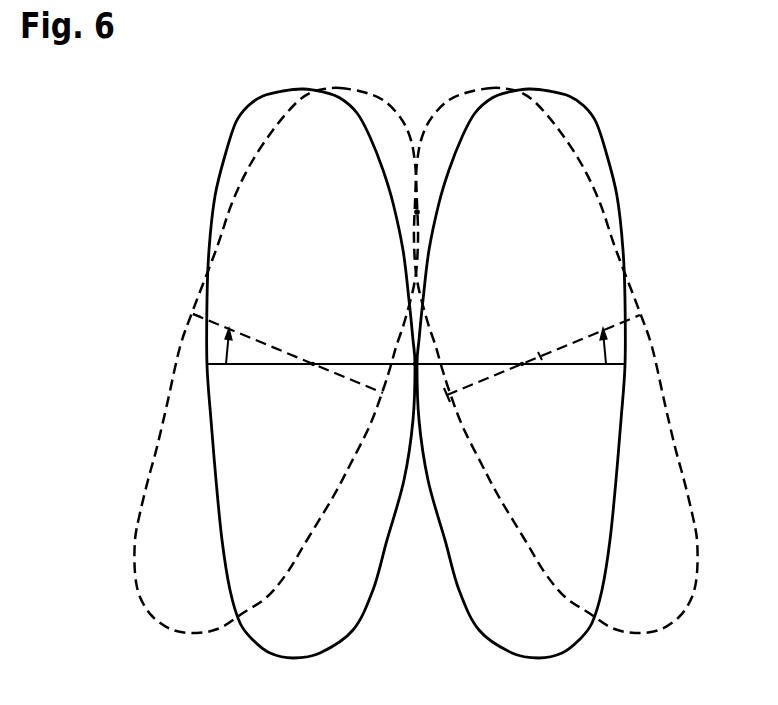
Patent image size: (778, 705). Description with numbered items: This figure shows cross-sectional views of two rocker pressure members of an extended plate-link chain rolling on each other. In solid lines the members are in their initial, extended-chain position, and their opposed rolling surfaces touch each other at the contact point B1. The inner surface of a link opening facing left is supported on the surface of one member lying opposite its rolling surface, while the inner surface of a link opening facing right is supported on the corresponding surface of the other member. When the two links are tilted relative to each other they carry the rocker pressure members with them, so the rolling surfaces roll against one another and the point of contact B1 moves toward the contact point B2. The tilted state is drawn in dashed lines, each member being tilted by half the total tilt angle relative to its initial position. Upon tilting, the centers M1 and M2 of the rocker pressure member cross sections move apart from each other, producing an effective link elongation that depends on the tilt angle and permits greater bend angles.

The contact point B1 is at (410, 358).
The contact point B2 is at (417, 212).
The center of rocker pressure member cross section M1 is at (312, 368).
The center of rocker pressure member cross section M2 is at (522, 368).